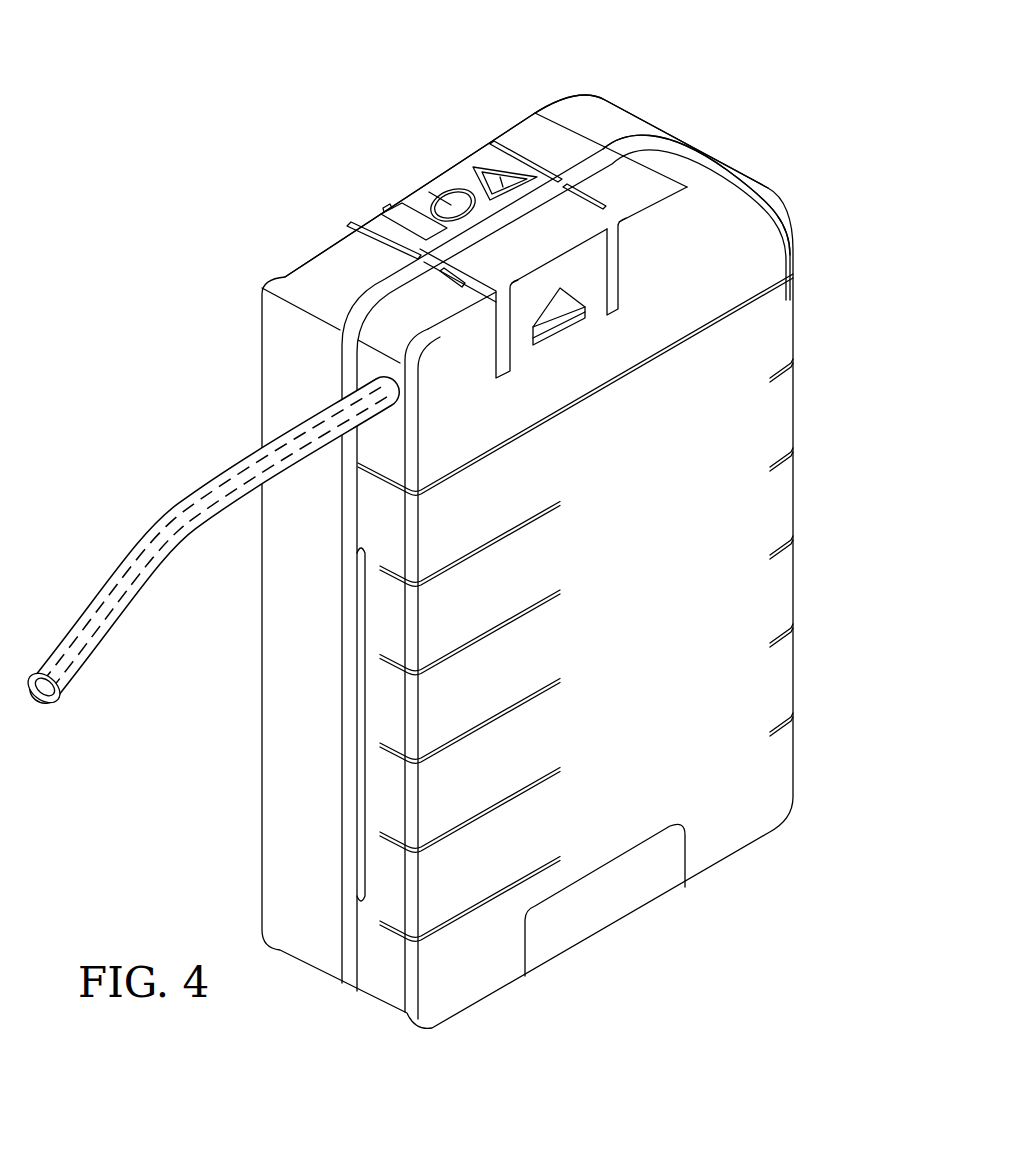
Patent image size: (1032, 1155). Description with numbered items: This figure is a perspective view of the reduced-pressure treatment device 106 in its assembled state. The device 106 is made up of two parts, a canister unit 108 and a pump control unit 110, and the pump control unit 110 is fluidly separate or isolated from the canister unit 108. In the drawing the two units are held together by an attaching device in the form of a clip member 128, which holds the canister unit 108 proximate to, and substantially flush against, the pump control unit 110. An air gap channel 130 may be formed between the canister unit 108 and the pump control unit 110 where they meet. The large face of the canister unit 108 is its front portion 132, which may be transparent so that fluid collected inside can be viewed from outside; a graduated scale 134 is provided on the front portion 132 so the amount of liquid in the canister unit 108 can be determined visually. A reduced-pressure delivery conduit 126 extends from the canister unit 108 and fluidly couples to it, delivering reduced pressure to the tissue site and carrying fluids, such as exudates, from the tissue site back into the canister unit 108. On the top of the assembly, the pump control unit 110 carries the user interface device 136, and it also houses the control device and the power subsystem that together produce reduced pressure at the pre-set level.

The reduced-pressure treatment device 106 is at (313, 224).
The canister unit 108 is at (722, 157).
The pump control unit 110 is at (572, 90).
The reduced-pressure delivery conduit 126 is at (177, 500).
The clip member 128 is at (613, 904).
The air gap channel 130 is at (362, 888).
The front portion 132 is at (756, 500).
The graduated scale 134 is at (648, 627).
The user interface device 136 is at (461, 178).